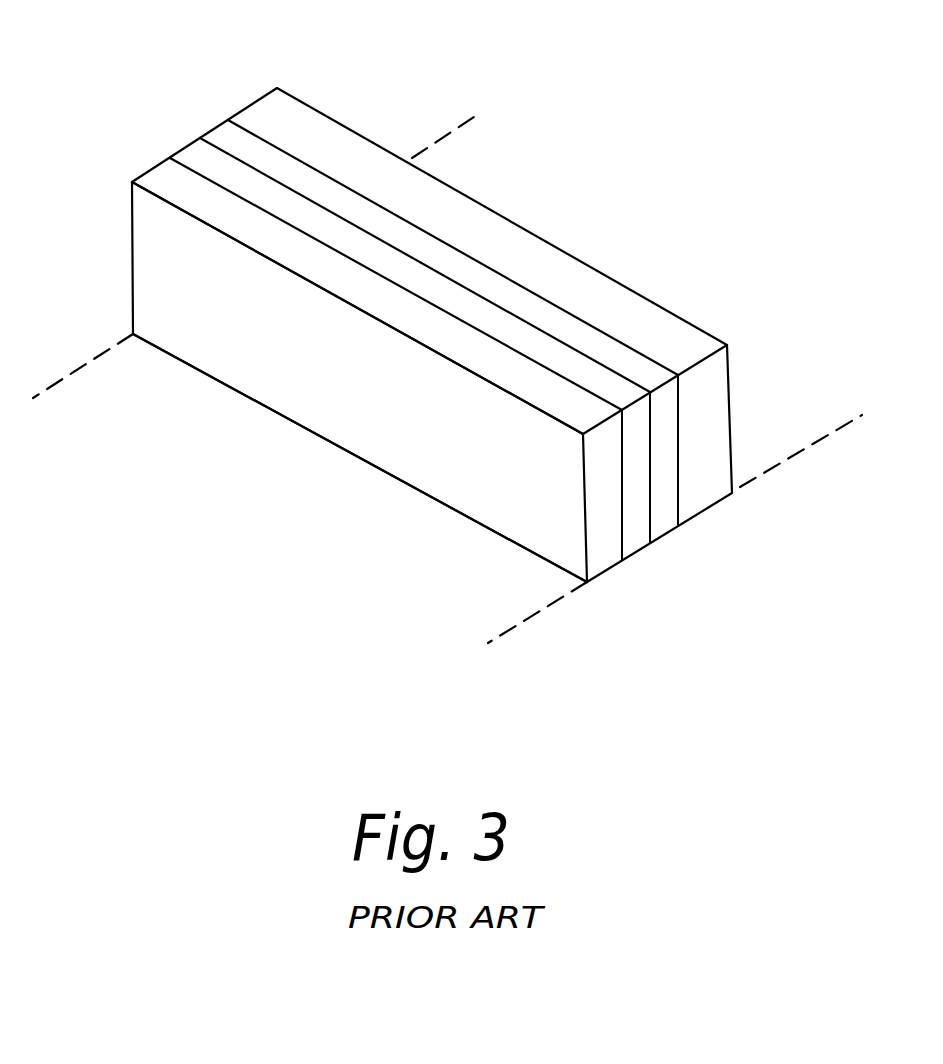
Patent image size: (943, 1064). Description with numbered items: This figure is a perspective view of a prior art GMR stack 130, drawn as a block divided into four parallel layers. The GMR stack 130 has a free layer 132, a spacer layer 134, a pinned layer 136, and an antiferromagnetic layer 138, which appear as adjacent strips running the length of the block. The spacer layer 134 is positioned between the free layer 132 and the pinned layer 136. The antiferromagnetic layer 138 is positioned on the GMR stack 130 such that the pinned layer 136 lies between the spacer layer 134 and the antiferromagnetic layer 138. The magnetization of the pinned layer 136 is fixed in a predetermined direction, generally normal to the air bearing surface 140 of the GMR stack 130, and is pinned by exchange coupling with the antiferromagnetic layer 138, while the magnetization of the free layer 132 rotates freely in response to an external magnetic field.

The GMR stack 130 is at (447, 331).
The free layer 132 is at (300, 118).
The spacer layer 134 is at (227, 132).
The pinned layer 136 is at (197, 147).
The antiferromagnetic layer 138 is at (160, 174).
The air bearing surface 140 is at (573, 585).